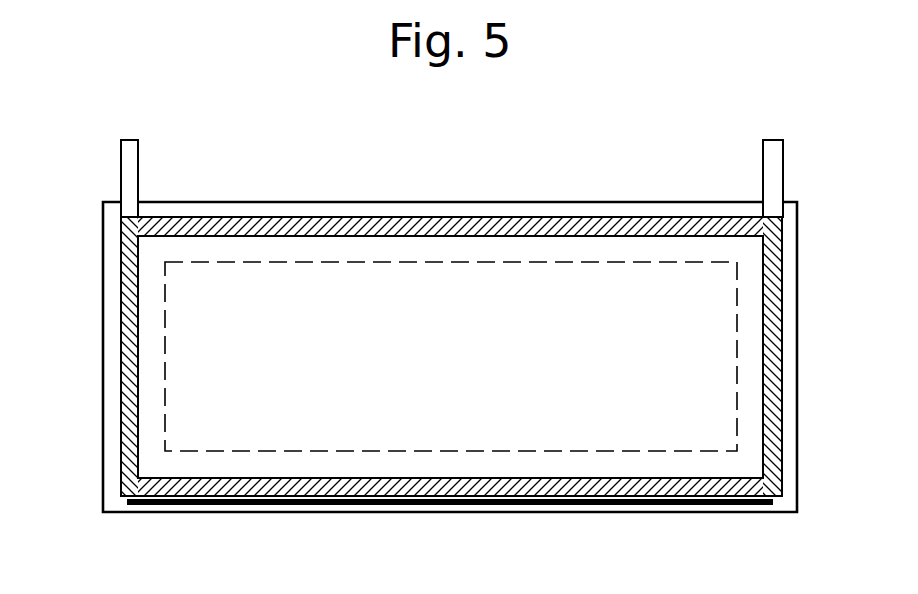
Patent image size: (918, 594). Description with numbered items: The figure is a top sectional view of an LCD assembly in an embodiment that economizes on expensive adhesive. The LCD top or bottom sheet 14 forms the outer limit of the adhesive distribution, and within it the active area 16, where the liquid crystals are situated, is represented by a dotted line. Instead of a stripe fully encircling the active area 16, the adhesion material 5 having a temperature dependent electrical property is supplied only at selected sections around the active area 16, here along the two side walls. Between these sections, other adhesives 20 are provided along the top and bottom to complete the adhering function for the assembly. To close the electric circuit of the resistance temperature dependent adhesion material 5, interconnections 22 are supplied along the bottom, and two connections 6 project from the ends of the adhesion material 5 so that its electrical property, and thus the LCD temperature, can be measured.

The adhesion material 5 is at (780, 406).
The connections 6 is at (127, 163).
The LCD top or bottom sheet 14 is at (790, 310).
The active area 16 is at (162, 300).
The other adhesives 20 is at (453, 220).
The interconnections 22 is at (568, 505).